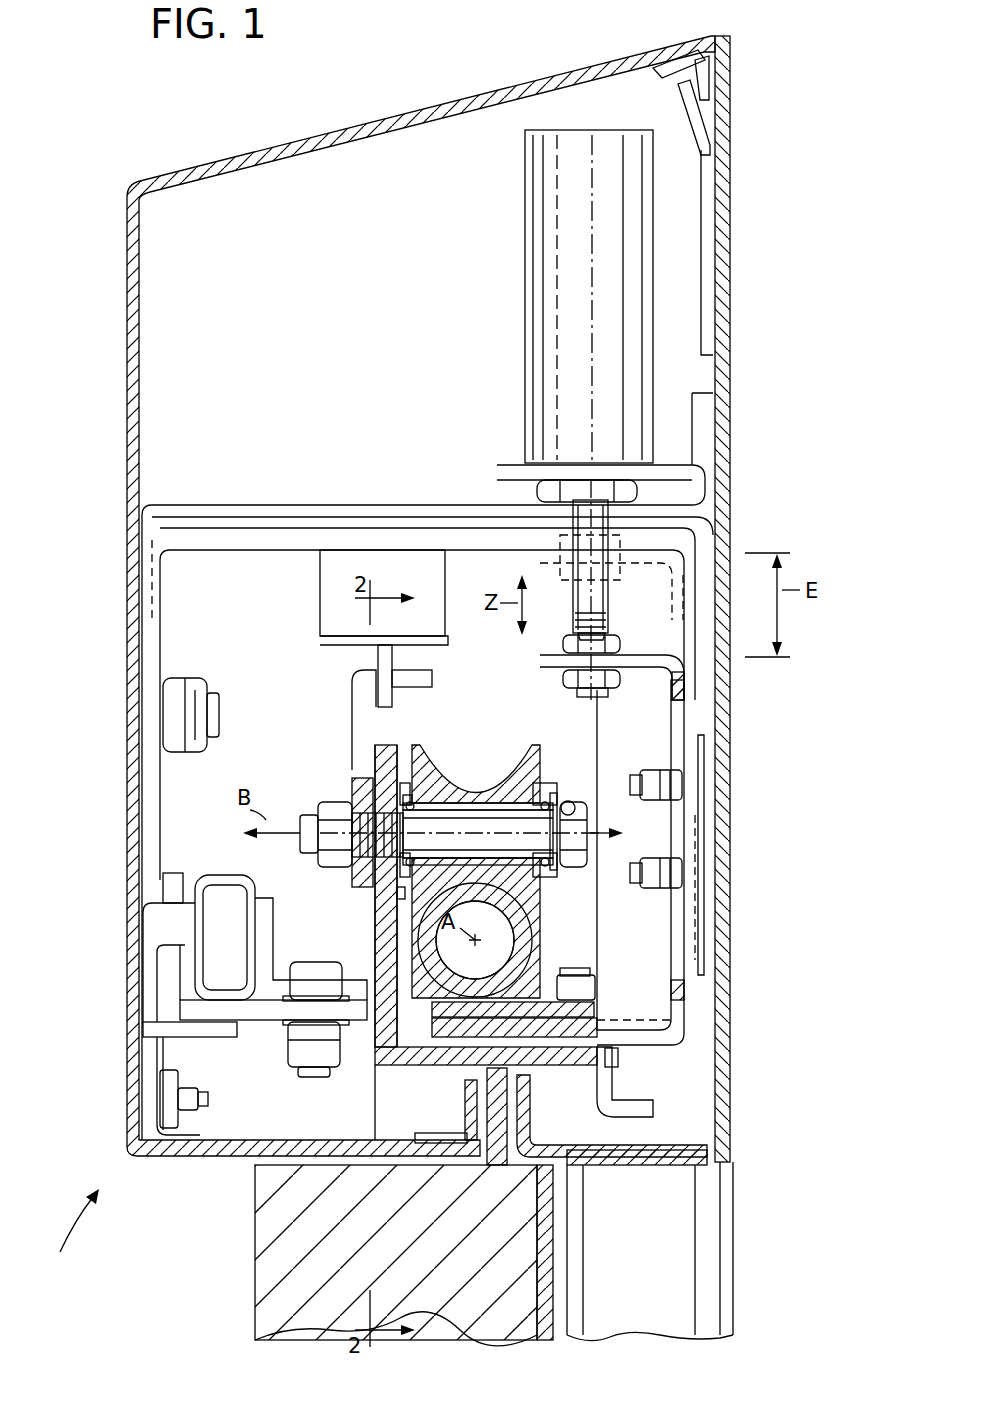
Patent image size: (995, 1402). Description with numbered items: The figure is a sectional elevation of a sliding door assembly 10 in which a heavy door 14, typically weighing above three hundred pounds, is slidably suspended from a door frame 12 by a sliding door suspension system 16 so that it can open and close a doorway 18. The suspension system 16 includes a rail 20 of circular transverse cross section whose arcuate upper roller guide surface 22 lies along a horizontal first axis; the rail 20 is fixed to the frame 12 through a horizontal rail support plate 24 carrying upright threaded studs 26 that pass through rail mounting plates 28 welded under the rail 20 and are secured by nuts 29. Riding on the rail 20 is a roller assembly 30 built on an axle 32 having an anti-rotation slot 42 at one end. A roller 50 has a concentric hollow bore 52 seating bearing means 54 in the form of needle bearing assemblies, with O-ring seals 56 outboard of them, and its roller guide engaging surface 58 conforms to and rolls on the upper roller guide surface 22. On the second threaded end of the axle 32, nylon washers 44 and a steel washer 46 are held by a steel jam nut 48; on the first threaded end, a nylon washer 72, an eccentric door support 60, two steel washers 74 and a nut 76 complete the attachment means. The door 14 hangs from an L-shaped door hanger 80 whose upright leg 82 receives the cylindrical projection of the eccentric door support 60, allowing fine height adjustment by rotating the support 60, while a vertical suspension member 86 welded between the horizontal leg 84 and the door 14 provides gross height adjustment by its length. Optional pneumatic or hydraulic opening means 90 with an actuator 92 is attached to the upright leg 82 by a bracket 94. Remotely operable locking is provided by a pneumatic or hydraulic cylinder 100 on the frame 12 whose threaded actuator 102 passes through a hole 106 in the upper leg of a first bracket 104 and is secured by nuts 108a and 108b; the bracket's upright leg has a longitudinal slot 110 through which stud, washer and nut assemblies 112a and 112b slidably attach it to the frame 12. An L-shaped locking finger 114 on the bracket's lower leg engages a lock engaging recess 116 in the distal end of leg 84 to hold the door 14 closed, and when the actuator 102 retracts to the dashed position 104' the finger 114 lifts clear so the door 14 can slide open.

The sliding door assembly 10 is at (68, 1235).
The door frame 12 is at (745, 1144).
The heavy door 14 is at (270, 1198).
The sliding door suspension system 16 is at (278, 751).
The doorway 18 is at (620, 1342).
The rail 20 is at (380, 928).
The upper roller guide surface 22 is at (537, 894).
The horizontal rail support plate 24 is at (603, 1027).
The threaded stud 26 is at (592, 968).
The rail mounting plate 28 is at (436, 1010).
The nut 29 is at (589, 988).
The roller assembly 30 is at (574, 726).
The axle 32 is at (469, 846).
The slot 42 is at (308, 840).
The nylon washers 44 is at (549, 790).
The steel washer 46 is at (572, 800).
The steel jam nut 48 is at (582, 805).
The roller 50 is at (407, 793).
The concentric hollow bore 52 is at (530, 790).
The bearing means 54 is at (472, 803).
The O-ring seals 56 is at (420, 790).
The roller guide engaging surface 58 is at (471, 790).
The eccentric door support 60 is at (395, 894).
The nylon washer 72 is at (403, 785).
The steel washers 74 is at (356, 785).
The nut 76 is at (330, 805).
The L-shaped door hanger 80 is at (375, 1062).
The upright leg 82 is at (380, 950).
The horizontal leg 84 is at (455, 1062).
The vertical suspension member 86 is at (495, 1118).
The opening means 90 is at (340, 578).
The actuator 92 is at (378, 657).
The bracket 94 is at (358, 703).
The pneumatic or hydraulic cylinder 100 is at (602, 282).
The threaded actuator 102 is at (590, 596).
The first bracket 104 is at (612, 657).
The first bracket in upper position 104' is at (665, 767).
The hole 106 is at (608, 630).
The nut 108a is at (562, 645).
The nut 108b is at (562, 681).
The longitudinal slot 110 is at (690, 712).
The stud, washer and nut assembly 112a is at (660, 802).
The stud, washer and nut assembly 112b is at (660, 892).
The L-shaped locking finger 114 is at (610, 1082).
The lock engaging recess 116 is at (585, 1058).